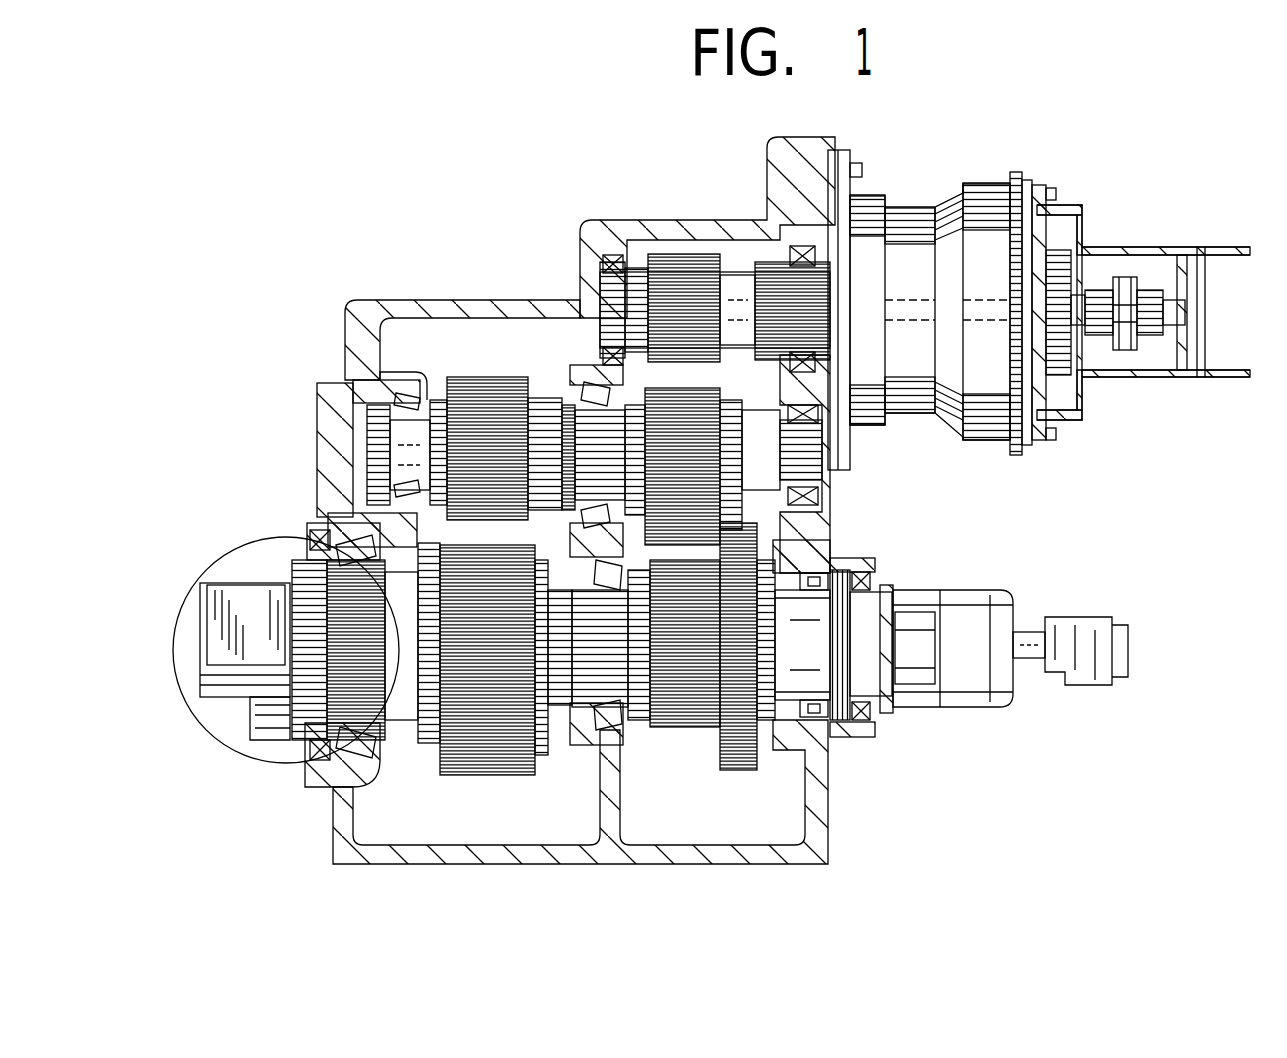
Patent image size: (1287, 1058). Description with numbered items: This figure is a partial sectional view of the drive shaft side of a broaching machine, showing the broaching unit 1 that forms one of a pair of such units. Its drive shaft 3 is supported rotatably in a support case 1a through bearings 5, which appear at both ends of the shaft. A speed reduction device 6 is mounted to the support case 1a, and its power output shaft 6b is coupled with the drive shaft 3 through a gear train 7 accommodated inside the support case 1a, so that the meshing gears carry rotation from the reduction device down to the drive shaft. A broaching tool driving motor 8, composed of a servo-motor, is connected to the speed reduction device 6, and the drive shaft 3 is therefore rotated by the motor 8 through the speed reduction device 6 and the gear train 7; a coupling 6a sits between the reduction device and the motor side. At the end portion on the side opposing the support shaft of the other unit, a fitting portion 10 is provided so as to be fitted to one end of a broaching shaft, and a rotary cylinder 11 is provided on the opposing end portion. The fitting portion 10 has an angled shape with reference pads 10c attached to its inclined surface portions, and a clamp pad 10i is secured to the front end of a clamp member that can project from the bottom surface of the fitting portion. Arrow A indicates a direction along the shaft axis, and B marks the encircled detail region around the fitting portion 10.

The broaching unit 1 is at (596, 500).
The support case 1a is at (412, 312).
The drive shaft 3 is at (476, 773).
The bearings 5 is at (407, 762).
The speed reduction device 6 is at (903, 232).
The coupling 6a is at (1098, 345).
The power output shaft 6b is at (858, 355).
The gear train 7 is at (650, 392).
The broaching tool driving motor 8 is at (1228, 374).
The fitting portion 10 is at (282, 636).
The reference pads 10c is at (262, 594).
The clamp pad 10i is at (220, 712).
The rotary cylinder 11 is at (991, 704).
The direction A is at (272, 462).
The gear B is at (266, 768).